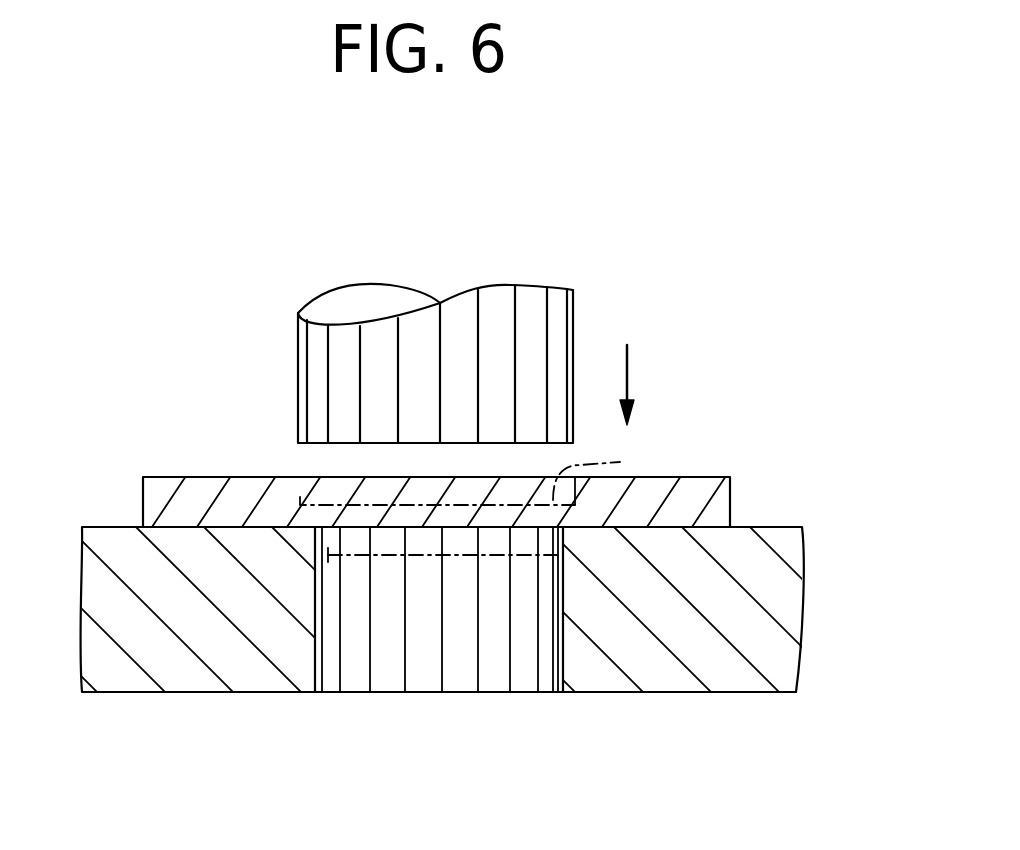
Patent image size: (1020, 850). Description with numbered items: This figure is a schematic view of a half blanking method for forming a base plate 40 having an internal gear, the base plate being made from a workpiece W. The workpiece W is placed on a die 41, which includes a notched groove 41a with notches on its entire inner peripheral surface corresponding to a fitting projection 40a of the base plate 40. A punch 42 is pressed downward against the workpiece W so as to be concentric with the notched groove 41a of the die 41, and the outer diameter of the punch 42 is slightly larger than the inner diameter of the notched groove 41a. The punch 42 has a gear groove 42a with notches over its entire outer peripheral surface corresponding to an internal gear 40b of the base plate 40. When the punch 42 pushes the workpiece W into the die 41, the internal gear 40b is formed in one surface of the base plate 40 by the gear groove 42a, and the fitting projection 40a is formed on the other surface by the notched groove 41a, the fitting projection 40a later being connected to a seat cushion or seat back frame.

The base plate 40 is at (118, 470).
The fitting projection 40a is at (463, 555).
The internal gear 40b is at (620, 462).
The die 41 is at (780, 596).
The notched groove 41a is at (552, 660).
The punch 42 is at (497, 300).
The gear groove 42a is at (342, 377).
The workpiece W is at (230, 487).